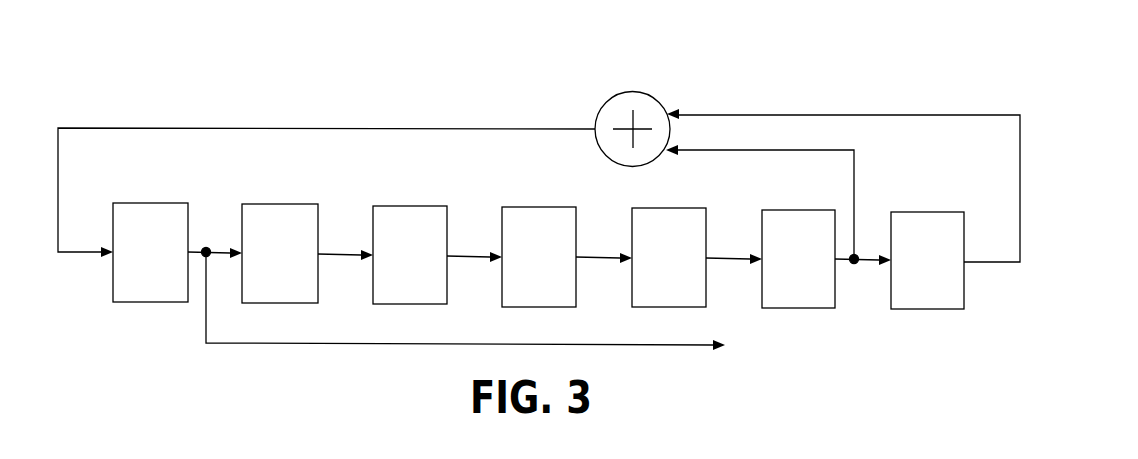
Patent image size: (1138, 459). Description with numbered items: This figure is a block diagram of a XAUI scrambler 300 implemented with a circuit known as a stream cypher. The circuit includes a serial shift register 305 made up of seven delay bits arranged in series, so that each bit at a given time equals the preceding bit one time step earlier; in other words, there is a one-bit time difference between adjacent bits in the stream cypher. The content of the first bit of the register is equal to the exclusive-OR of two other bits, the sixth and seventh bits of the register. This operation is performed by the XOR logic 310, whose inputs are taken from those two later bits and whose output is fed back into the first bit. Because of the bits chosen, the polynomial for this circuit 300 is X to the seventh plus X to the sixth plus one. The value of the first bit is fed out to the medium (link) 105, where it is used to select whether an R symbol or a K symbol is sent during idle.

The XAUI scrambler 300 is at (512, 80).
The XOR logic 310 is at (632, 92).
The serial shift register 305 is at (995, 290).
The medium (link) 105 is at (533, 320).